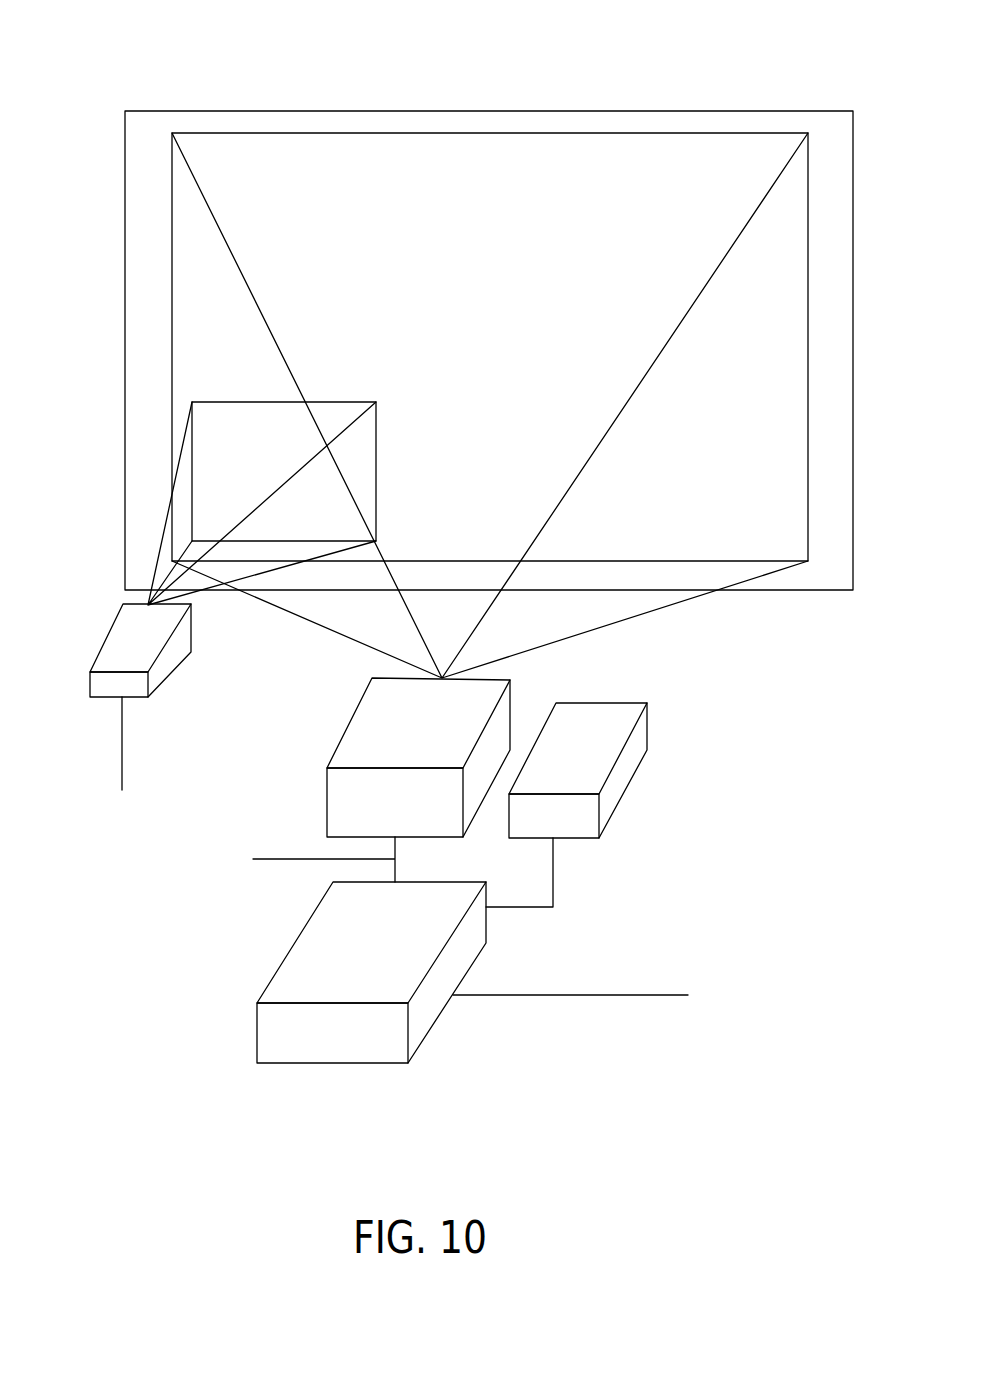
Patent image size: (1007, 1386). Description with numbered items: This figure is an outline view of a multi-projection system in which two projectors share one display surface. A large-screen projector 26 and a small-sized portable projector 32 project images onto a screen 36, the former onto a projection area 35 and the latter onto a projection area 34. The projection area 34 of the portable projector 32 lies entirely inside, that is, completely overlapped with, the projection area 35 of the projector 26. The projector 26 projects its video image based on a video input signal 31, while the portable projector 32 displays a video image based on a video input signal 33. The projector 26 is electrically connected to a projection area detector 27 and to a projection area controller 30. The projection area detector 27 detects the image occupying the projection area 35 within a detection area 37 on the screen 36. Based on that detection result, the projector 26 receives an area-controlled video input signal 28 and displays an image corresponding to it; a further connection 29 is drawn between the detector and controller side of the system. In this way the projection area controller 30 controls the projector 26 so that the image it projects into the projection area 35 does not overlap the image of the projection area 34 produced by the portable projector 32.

The projector 26 is at (372, 814).
The projection area detector 27 is at (555, 815).
The video input signal 28 is at (308, 859).
The signal line 29 is at (530, 907).
The projection area controller 30 is at (303, 1040).
The video input signal 31 is at (530, 995).
The portable projector 32 is at (132, 672).
The video input signal 33 is at (106, 743).
The projection area 34 is at (215, 487).
The projection area 35 is at (215, 315).
The screen 36 is at (255, 93).
The detection area 37 is at (493, 110).